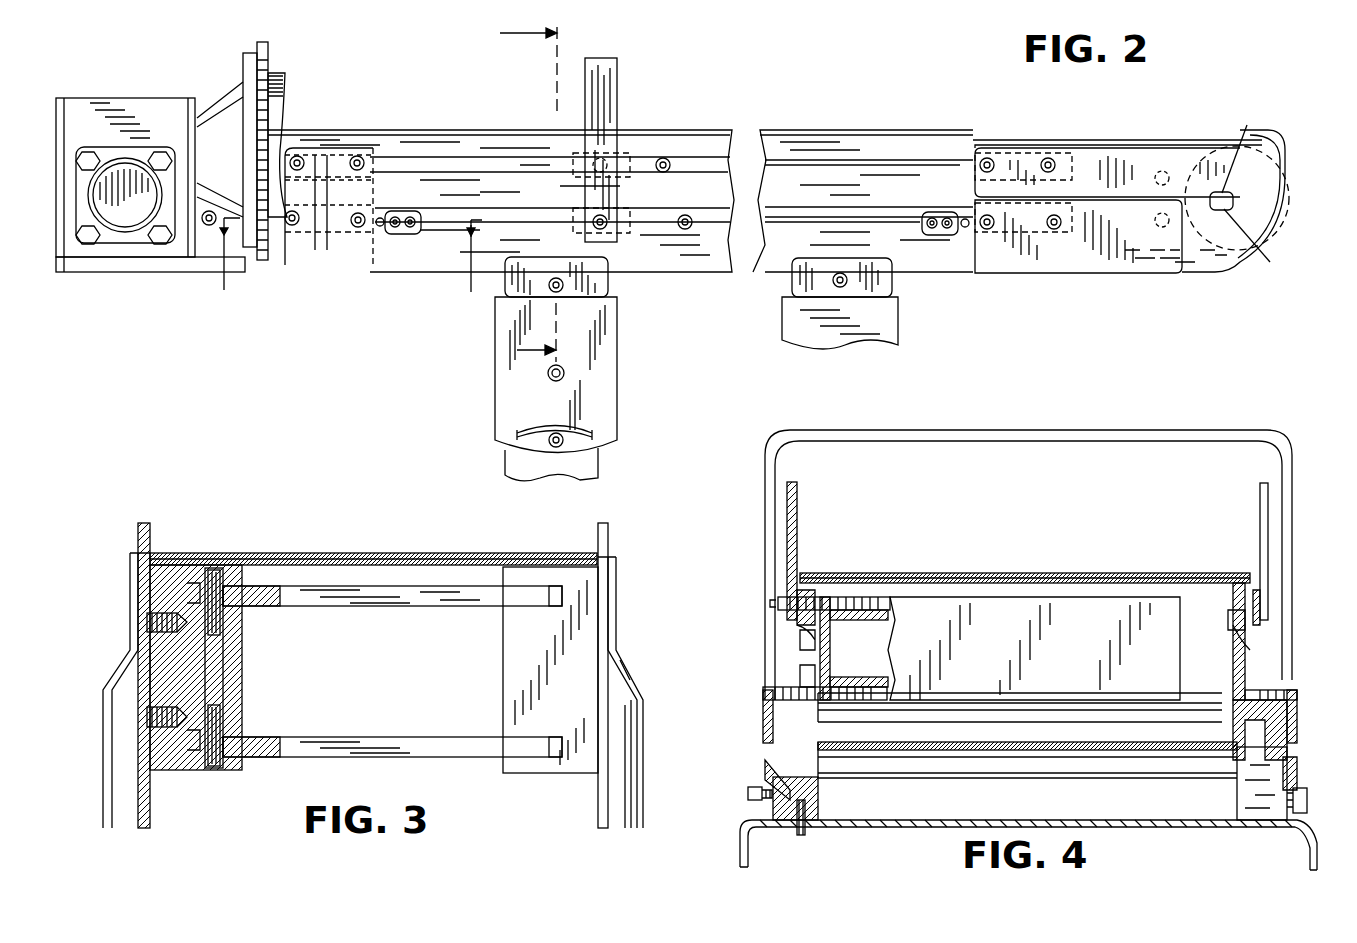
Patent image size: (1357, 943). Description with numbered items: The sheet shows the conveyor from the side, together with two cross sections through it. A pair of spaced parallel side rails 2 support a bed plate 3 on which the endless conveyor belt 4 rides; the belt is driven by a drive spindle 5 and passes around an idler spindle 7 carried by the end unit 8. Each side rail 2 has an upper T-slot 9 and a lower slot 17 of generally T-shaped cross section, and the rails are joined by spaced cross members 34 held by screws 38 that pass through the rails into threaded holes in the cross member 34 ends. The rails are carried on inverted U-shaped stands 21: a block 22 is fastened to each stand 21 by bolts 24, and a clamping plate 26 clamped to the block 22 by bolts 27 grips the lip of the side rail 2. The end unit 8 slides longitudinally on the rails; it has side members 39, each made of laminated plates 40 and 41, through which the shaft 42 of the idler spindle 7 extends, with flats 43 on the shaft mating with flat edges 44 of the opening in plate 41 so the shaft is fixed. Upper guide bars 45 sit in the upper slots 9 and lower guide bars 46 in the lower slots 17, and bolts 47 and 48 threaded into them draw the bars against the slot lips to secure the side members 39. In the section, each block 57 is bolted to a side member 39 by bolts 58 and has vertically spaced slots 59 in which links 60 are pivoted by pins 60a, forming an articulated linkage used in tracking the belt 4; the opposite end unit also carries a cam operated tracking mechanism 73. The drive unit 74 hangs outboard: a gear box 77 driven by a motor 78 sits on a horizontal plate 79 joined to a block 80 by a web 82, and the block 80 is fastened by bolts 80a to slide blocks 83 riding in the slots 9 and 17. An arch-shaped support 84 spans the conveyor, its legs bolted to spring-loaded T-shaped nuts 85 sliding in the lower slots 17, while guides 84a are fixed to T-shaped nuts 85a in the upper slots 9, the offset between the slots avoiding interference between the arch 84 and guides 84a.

In FIG. 2, the side rail 2 is at (872, 130).
In FIG. 3, the side rail 2 is at (193, 666).
In FIG. 4, the side rail 2 is at (763, 716).
In FIG. 3, the bed plate 3 is at (368, 555).
In FIG. 4, the bed plate 3 is at (1112, 573).
In FIG. 2, the endless conveyor belt 4 is at (537, 193).
In FIG. 3, the endless conveyor belt 4 is at (420, 555).
In FIG. 4, the endless conveyor belt 4 is at (1148, 573).
In FIG. 2, the drive spindle 5 is at (351, 267).
In FIG. 2, the idler spindle 7 is at (1285, 148).
In FIG. 2, the end unit 8 is at (1208, 124).
In FIG. 2, the upper T-slot 9 is at (810, 160).
In FIG. 4, the upper T-slot 9 is at (815, 650).
In FIG. 2, the lower slot 17 is at (793, 224).
In FIG. 4, the lower slot 17 is at (800, 670).
In FIG. 2, the stand 21 is at (612, 395).
In FIG. 4, the stand 21 is at (740, 845).
In FIG. 4, the block 22 is at (818, 805).
In FIG. 4, the bolt 24 is at (800, 835).
In FIG. 4, the clamping plate 26 is at (770, 768).
In FIG. 4, the bolt 27 is at (748, 793).
In FIG. 4, the cross member 34 is at (1034, 648).
In FIG. 4, the screw 38 is at (850, 597).
In FIG. 2, the side member 39 is at (1142, 146).
In FIG. 3, the side member 39 is at (130, 580).
In FIG. 2, the laminated plate 40 is at (1103, 156).
In FIG. 3, the laminated plate 40 is at (143, 820).
In FIG. 2, the laminated plate 41 is at (1104, 255).
In FIG. 3, the laminated plate 41 is at (103, 805).
In FIG. 2, the shaft 42 is at (1246, 137).
In FIG. 2, the flat 43 is at (1233, 202).
In FIG. 2, the flat edge 44 is at (1260, 245).
In FIG. 2, the upper guide bar 45 is at (1008, 156).
In FIG. 2, the lower guide bar 46 is at (1020, 235).
In FIG. 2, the bolt 47 is at (988, 158).
In FIG. 2, the bolt 48 is at (985, 230).
In FIG. 3, the block 57 is at (242, 674).
In FIG. 3, the bolt 58 is at (145, 622).
In FIG. 3, the slot 59 is at (223, 640).
In FIG. 3, the link 60 is at (370, 607).
In FIG. 4, the link 60 is at (1027, 735).
In FIG. 3, the pin 60a is at (214, 570).
In FIG. 2, the cam operated tracking mechanism 73 is at (400, 238).
In FIG. 2, the drive unit 74 is at (150, 272).
In FIG. 2, the gear box 77 is at (137, 104).
In FIG. 2, the motor 78 is at (280, 90).
In FIG. 2, the horizontal plate 79 is at (90, 268).
In FIG. 2, the block 80 is at (300, 267).
In FIG. 2, the bolt 80a is at (298, 156).
In FIG. 2, the web 82 is at (321, 255).
In FIG. 2, the slide block 83 is at (345, 150).
In FIG. 2, the support 84 is at (608, 80).
In FIG. 4, the support 84 is at (1118, 430).
In FIG. 4, the guide 84a is at (800, 500).
In FIG. 2, the T-shaped nut 85 is at (625, 153).
In FIG. 4, the T-shaped nut 85 is at (765, 690).
In FIG. 4, the T-shaped nut 85a is at (800, 597).